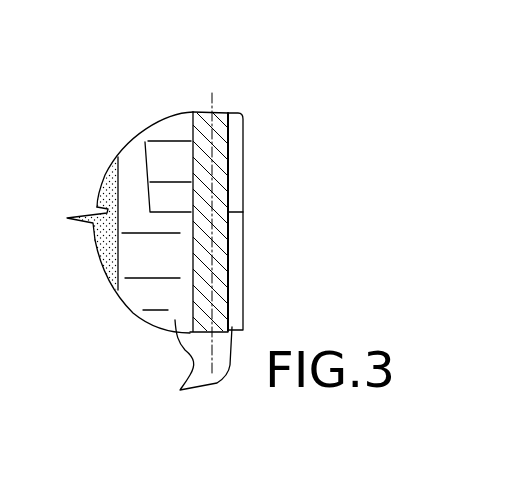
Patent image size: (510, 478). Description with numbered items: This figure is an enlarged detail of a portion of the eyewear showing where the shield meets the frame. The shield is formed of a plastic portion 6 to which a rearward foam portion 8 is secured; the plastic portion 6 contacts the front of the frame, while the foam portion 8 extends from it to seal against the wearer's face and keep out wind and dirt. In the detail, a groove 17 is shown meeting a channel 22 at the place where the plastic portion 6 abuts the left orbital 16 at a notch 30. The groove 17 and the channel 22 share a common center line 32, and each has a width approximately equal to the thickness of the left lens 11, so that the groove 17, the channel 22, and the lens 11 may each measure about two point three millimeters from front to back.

The left orbital 16 is at (168, 132).
The common center line 32 is at (214, 94).
The groove 17 is at (230, 142).
The notch 30 is at (243, 207).
The channel 22 is at (228, 248).
The left lens 11 is at (213, 303).
The foam portion 8 is at (107, 248).
The plastic portion 6 is at (196, 366).